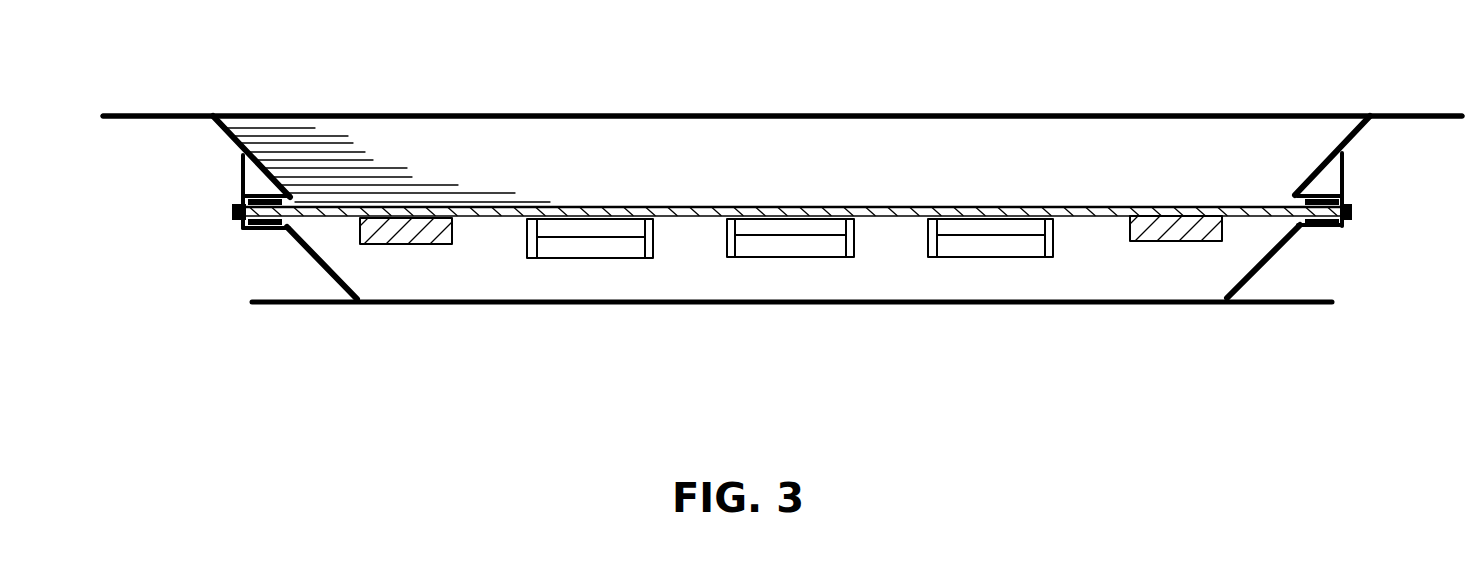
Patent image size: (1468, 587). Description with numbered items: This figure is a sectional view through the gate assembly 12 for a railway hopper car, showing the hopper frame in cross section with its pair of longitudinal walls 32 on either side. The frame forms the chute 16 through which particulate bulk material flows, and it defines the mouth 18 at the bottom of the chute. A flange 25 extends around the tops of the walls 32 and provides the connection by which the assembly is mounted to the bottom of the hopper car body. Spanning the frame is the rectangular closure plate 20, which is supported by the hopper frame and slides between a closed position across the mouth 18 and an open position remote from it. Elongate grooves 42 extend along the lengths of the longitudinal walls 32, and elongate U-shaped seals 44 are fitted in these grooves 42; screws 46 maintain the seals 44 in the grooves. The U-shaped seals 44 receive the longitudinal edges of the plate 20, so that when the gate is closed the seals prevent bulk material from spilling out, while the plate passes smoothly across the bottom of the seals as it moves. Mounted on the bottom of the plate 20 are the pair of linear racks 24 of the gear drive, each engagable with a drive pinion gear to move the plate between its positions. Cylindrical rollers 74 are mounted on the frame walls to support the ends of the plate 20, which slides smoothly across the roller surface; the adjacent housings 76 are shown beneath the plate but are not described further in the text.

The gate assembly 12 is at (818, 63).
The flange 25 is at (165, 117).
The mouth 18 is at (742, 312).
The chute 16 is at (746, 186).
The plate 20 is at (1012, 207).
The linear racks 24 is at (428, 233).
The housing 76 is at (650, 257).
The cylindrical rollers 74 is at (995, 225).
The elongate grooves 42 is at (320, 237).
The longitudinal walls 32 is at (1277, 250).
The U-shaped seals 44 is at (1347, 188).
The screws 46 is at (234, 212).